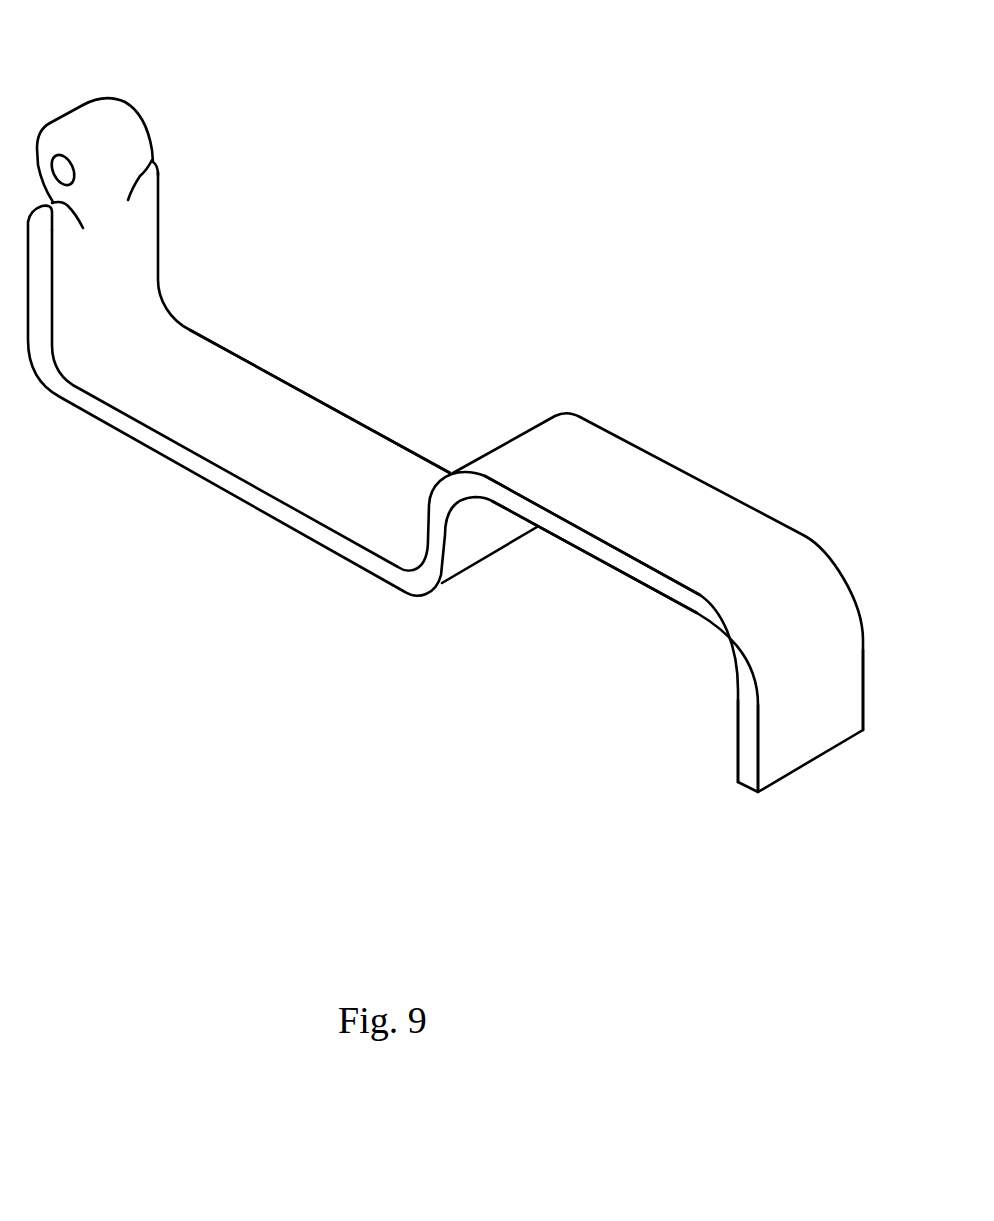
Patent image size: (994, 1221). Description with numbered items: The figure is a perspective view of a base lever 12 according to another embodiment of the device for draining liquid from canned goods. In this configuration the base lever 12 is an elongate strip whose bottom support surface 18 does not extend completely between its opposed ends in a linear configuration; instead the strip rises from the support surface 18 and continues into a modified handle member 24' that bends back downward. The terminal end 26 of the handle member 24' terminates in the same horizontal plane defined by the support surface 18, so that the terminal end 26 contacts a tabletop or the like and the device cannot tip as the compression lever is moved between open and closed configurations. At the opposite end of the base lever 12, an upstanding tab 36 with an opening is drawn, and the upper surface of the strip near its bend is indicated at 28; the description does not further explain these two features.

The base lever 12 is at (535, 152).
The mounting tab 36 is at (88, 100).
The support surface 18 is at (203, 480).
The upper surface of bend portion 28 is at (336, 367).
The handle member 24' is at (658, 588).
The terminal end 26 is at (795, 772).